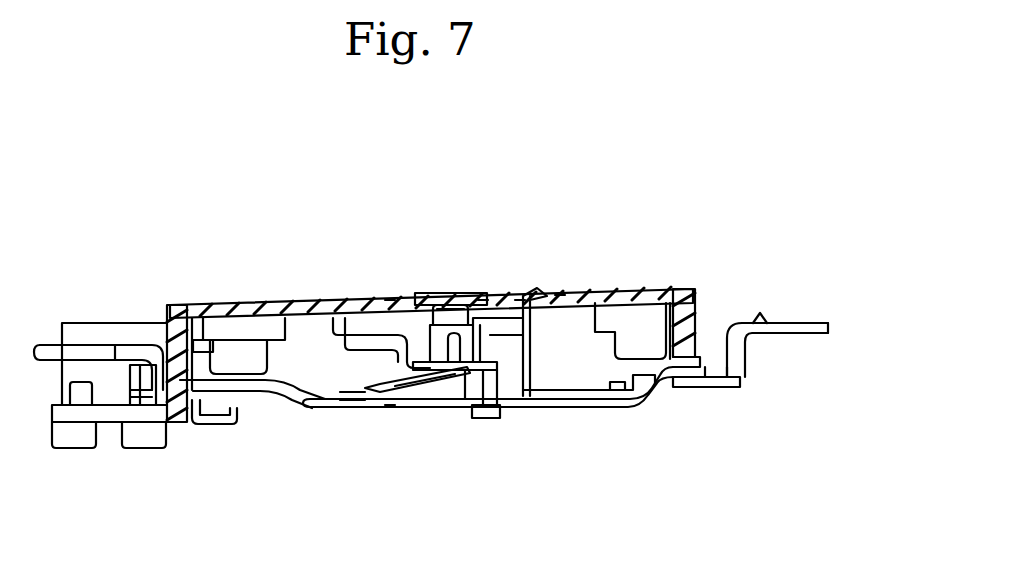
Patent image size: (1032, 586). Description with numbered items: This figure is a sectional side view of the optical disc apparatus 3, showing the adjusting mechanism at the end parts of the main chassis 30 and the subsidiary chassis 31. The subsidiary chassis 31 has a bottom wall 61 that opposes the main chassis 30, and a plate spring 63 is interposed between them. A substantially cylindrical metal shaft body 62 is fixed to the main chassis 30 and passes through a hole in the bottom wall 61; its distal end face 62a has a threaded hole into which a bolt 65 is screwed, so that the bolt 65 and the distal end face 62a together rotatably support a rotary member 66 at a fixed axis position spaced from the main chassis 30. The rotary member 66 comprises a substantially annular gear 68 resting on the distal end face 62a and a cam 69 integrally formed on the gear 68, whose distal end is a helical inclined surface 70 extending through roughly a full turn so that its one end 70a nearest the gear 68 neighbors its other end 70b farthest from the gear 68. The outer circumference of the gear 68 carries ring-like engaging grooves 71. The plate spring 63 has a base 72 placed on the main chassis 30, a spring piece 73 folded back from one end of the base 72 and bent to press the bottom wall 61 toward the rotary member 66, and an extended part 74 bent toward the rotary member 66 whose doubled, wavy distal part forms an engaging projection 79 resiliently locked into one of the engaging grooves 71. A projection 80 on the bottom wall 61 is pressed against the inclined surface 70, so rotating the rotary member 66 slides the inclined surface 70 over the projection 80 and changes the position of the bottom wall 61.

The connector assembly 3 is at (828, 196).
The main chassis 30 is at (827, 313).
The subsidiary chassis 31 is at (687, 290).
The bottom wall 61 is at (497, 410).
The shaft body 62 is at (447, 409).
The distal end face 62a is at (450, 297).
The plate spring 63 is at (553, 410).
The bolt 65 is at (482, 300).
The rotary member 66 is at (367, 295).
The gear 68 is at (427, 296).
The cam 69 is at (520, 298).
The inclined surface 70 is at (577, 300).
The one end of the inclined surface 70a is at (388, 298).
The other end of the inclined surface 70b is at (390, 413).
The engaging grooves 71 is at (345, 295).
The base 72 is at (453, 412).
The spring piece 73 is at (348, 301).
The extended part 74 is at (583, 410).
The engaging projection 79 is at (560, 294).
The projection 80 is at (440, 405).